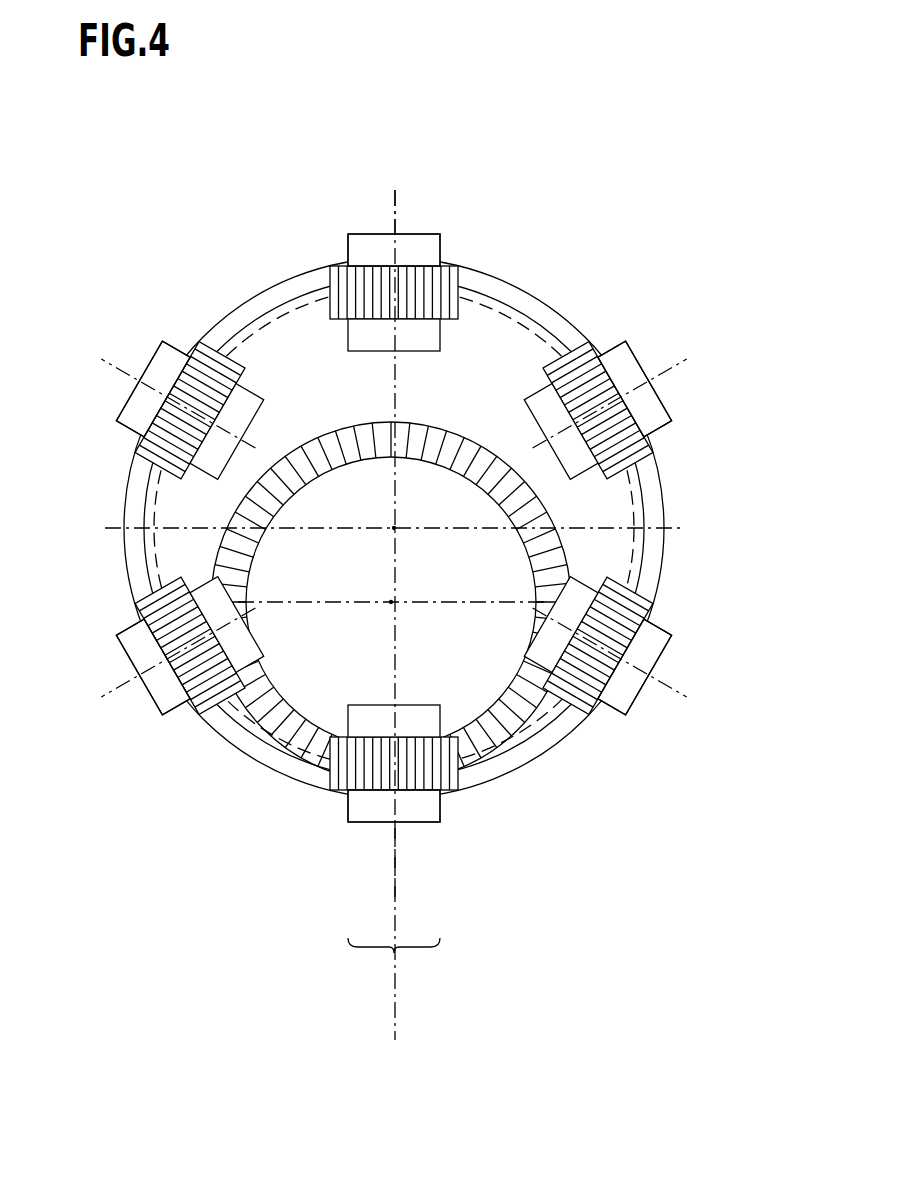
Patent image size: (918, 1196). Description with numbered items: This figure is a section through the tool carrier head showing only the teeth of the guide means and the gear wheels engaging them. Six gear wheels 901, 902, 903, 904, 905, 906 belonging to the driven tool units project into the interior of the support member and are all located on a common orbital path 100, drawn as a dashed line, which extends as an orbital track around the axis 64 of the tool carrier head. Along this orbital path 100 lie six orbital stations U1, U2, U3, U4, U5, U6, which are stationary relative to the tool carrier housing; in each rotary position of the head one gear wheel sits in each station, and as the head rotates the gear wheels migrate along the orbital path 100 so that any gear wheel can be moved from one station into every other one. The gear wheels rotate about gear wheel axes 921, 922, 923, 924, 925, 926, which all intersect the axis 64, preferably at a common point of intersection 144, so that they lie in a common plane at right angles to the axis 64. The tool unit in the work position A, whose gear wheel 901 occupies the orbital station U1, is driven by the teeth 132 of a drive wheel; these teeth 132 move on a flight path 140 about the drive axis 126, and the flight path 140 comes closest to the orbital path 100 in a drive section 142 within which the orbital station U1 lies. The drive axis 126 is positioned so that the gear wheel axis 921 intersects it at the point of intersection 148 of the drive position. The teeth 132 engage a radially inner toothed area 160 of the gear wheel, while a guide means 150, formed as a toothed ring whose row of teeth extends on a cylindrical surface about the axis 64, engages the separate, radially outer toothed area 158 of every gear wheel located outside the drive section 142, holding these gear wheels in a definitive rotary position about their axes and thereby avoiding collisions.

The axis 64 is at (397, 528).
The orbital path 100 is at (267, 300).
The drive axis 126 is at (392, 602).
The teeth 132 is at (317, 450).
The flight path 140 is at (228, 542).
The drive section 142 is at (393, 953).
The common point of intersection 144 is at (397, 528).
The point of intersection of the drive position 148 is at (395, 603).
The guide means 150 is at (543, 780).
The toothed area located radially outwards 158 is at (460, 782).
The toothed area located radially inwards 160 is at (487, 780).
The gear wheel 901 is at (428, 822).
The gear wheel 902 is at (119, 622).
The gear wheel 903 is at (172, 338).
The gear wheel 904 is at (446, 234).
The gear wheel 905 is at (642, 349).
The gear wheel 906 is at (670, 626).
The gear wheel axis 921 is at (380, 800).
The gear wheel axis 922 is at (160, 688).
The gear wheel axis 923 is at (157, 404).
The gear wheel axis 924 is at (397, 248).
The gear wheel axis 925 is at (660, 422).
The gear wheel axis 926 is at (627, 660).
The work position A is at (396, 1010).
The orbital station U1 is at (395, 850).
The orbital station U2 is at (113, 683).
The orbital station U3 is at (104, 362).
The orbital station U4 is at (396, 190).
The orbital station U5 is at (670, 375).
The orbital station U6 is at (650, 677).